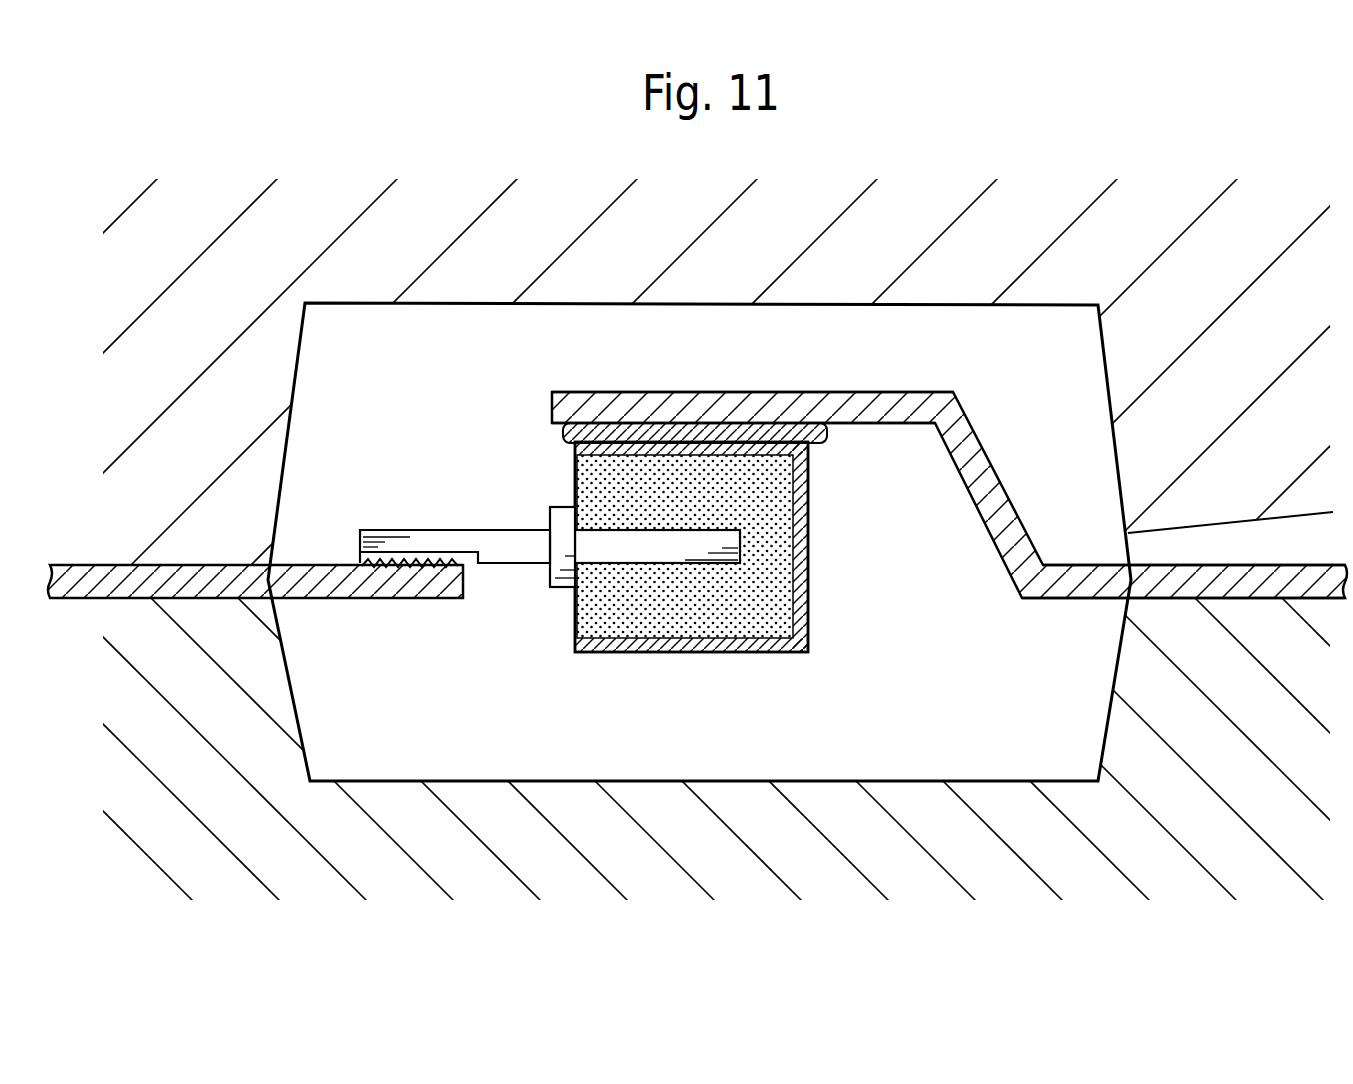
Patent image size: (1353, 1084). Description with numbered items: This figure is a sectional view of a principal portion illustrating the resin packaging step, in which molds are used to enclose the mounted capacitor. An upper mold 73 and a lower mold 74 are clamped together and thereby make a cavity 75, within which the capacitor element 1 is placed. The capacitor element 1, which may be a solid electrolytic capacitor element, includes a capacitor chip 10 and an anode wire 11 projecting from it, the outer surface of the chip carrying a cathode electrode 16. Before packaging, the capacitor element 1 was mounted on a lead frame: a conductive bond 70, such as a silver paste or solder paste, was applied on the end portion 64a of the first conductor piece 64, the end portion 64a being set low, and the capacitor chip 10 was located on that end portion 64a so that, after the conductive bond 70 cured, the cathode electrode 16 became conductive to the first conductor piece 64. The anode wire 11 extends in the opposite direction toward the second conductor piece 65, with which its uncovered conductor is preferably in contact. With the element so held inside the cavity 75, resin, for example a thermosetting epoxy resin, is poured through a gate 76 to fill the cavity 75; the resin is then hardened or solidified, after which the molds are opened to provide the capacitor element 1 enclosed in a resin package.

The capacitor element 1 is at (814, 661).
The capacitor chip 10 is at (673, 618).
The anode wire 11 is at (504, 512).
The cathode electrode 16 is at (808, 563).
The first conductor piece 64 is at (1016, 480).
The end portion 64a is at (745, 405).
The second conductor piece 65 is at (335, 600).
The conductive bond 70 is at (813, 445).
The upper mold 73 is at (1023, 282).
The lower mold 74 is at (487, 797).
The cavity 75 is at (591, 342).
The gate 76 is at (1225, 545).